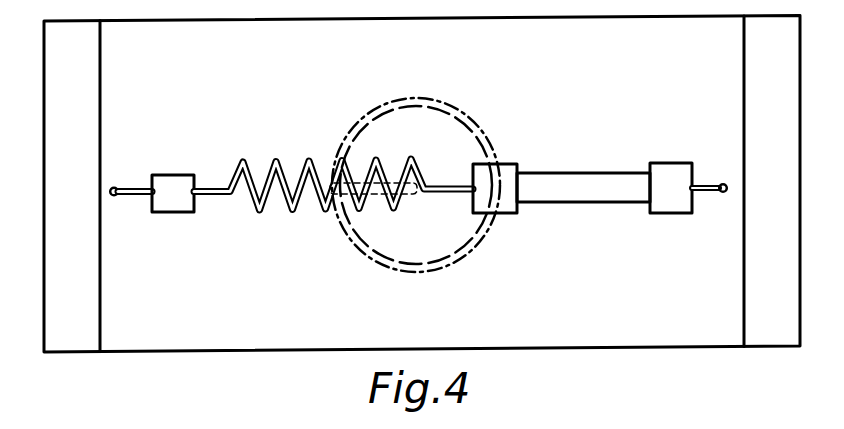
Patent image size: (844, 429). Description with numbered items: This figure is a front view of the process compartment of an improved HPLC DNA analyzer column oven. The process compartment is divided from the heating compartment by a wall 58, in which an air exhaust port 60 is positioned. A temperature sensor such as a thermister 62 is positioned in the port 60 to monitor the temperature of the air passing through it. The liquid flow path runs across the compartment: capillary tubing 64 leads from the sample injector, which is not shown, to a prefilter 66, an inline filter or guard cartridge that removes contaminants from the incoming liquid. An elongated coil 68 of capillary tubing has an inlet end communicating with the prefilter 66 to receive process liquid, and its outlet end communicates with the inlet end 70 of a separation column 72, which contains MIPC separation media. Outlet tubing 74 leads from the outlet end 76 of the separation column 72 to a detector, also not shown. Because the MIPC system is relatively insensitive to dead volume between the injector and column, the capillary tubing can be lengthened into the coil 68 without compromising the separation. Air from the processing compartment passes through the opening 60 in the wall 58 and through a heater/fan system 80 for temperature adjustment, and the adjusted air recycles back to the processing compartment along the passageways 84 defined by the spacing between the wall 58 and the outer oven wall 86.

The wall 58 is at (423, 168).
The air exhaust port 60 is at (416, 185).
The thermister 62 is at (394, 211).
The capillary tubing 64 is at (131, 174).
The prefilter 66 is at (176, 176).
The elongated coil 68 is at (333, 163).
The inlet end 70 is at (504, 172).
The separation column 72 is at (583, 168).
The outlet tubing 74 is at (714, 168).
The outlet end 76 is at (672, 171).
The heater/fan system 80 is at (422, 177).
The passageways 84 is at (422, 184).
The outer oven wall 86 is at (422, 184).